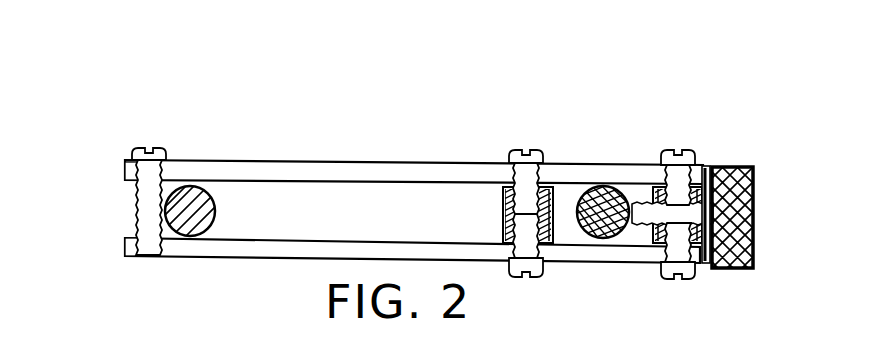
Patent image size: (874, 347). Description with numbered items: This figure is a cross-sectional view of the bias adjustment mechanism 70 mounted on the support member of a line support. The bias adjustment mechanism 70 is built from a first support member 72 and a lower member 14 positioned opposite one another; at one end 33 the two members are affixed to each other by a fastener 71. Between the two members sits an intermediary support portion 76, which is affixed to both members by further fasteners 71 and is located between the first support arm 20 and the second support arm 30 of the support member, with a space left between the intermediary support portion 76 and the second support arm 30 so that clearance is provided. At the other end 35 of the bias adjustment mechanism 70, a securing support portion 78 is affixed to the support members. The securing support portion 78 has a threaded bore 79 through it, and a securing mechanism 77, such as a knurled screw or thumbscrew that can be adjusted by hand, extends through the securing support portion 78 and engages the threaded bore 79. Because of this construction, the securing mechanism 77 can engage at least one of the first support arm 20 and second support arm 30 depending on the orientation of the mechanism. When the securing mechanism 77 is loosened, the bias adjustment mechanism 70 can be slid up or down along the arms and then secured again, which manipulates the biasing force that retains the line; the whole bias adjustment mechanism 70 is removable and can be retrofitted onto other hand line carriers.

The bias adjustment mechanism 70 is at (700, 78).
The one end 33 is at (112, 168).
The another end 35 is at (708, 152).
The fastener 71 is at (163, 146).
The first support member 72 is at (302, 160).
The lower rail 14 is at (268, 260).
The first support arm 20 is at (196, 240).
The second support arm 30 is at (588, 238).
The intermediary support portion 76 is at (502, 212).
The threaded bore 79 is at (666, 230).
The securing mechanism 77 is at (742, 168).
The securing support portion 78 is at (703, 245).